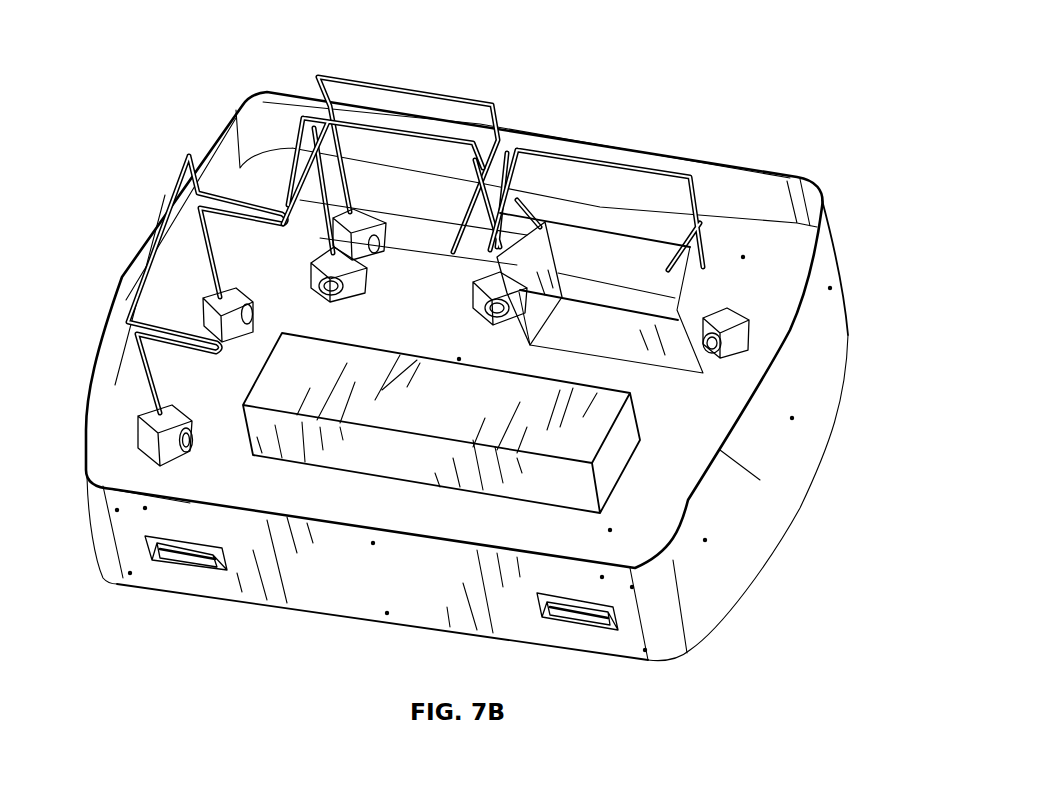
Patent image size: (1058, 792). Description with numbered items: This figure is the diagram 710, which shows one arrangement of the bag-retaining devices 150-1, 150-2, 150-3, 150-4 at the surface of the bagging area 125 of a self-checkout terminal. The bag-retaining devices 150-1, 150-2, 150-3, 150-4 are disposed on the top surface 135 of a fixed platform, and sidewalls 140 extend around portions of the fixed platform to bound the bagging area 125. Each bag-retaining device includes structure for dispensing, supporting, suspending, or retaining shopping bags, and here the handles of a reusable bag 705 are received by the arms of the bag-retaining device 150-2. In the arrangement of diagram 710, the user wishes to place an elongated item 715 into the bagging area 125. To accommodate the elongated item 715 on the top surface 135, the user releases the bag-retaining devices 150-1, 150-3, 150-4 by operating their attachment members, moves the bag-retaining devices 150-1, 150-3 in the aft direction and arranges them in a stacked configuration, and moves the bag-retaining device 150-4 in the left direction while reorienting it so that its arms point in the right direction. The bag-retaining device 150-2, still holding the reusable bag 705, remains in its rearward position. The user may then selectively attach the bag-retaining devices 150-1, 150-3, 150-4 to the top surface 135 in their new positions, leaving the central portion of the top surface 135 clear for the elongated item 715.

The diagram 710 is at (815, 63).
The bagging area 125 is at (836, 201).
The top surface 135 is at (207, 488).
The sidewalls 140 is at (777, 477).
The bag-retaining device 150-1 is at (348, 84).
The bag-retaining device 150-2 is at (562, 153).
The bag-retaining device 150-3 is at (379, 126).
The bag-retaining device 150-4 is at (171, 191).
The reusable bag 705 is at (716, 290).
The elongated item 715 is at (470, 432).